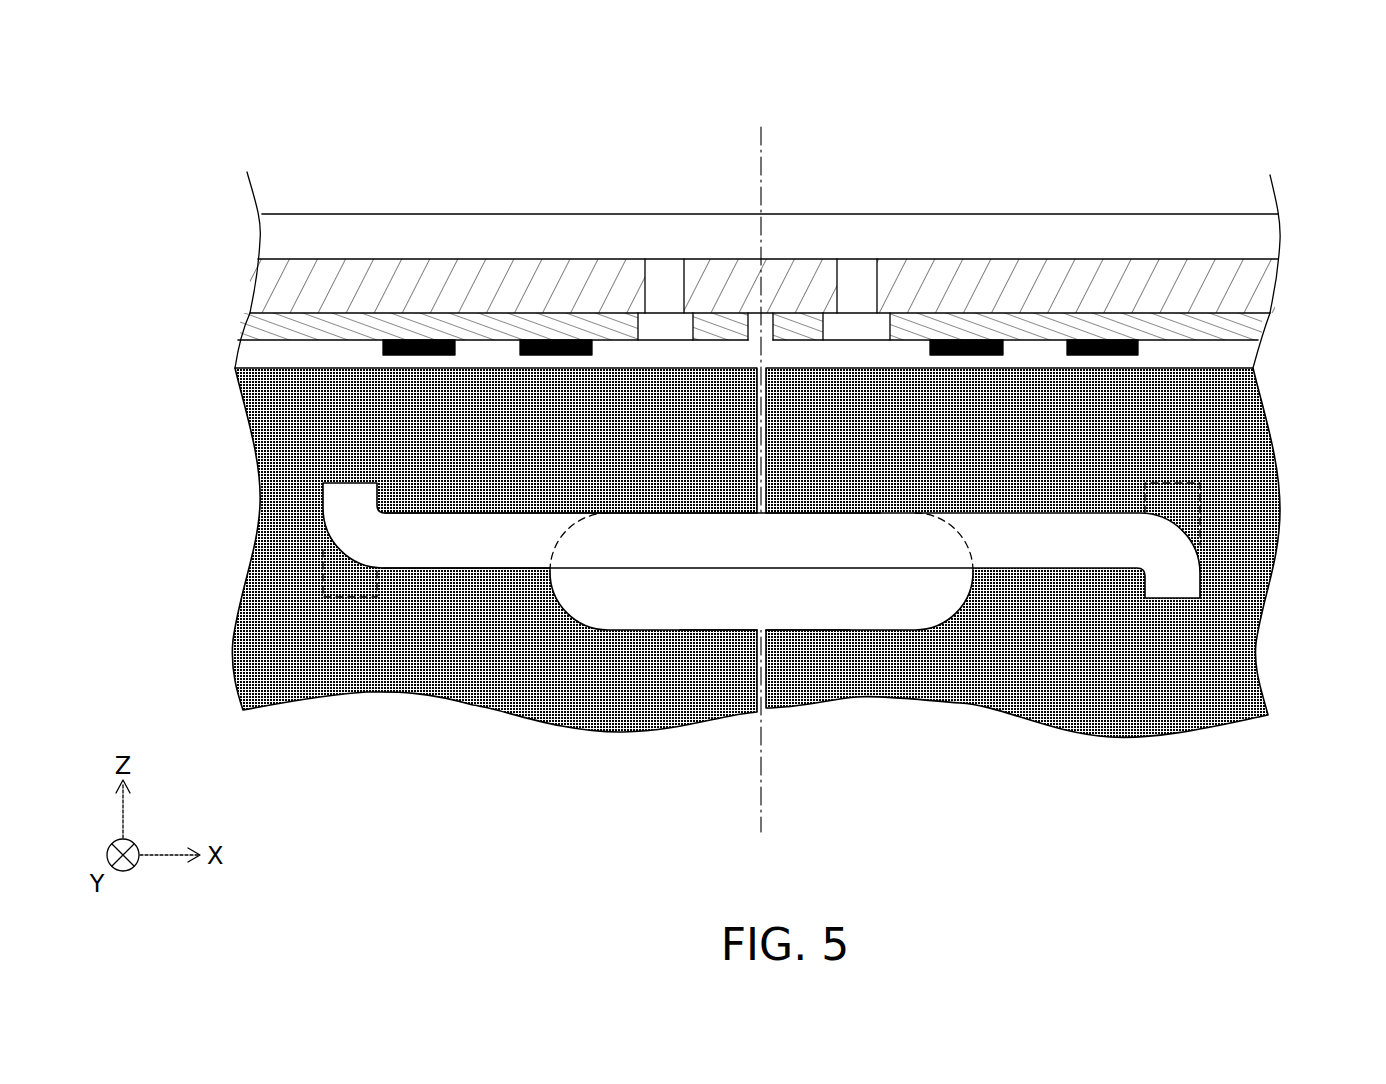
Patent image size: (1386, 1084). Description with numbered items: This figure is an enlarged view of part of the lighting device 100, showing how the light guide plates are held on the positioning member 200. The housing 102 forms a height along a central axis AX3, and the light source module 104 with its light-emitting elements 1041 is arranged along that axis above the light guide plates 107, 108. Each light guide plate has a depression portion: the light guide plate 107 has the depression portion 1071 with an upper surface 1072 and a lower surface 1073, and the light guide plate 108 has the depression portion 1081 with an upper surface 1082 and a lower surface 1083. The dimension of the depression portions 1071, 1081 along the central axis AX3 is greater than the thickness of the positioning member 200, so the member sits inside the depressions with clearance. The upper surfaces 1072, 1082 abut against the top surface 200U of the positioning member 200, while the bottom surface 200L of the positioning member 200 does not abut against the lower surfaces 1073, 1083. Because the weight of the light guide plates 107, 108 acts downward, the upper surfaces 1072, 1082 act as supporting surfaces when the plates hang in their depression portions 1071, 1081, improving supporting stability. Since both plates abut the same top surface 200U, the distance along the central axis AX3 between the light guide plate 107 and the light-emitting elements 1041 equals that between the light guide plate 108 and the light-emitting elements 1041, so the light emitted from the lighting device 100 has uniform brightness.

The lighting device 100 is at (197, 72).
The central axis AX3 is at (762, 465).
The housing 102 is at (1082, 240).
The light source module 104 is at (1232, 327).
The light-emitting elements 1041 is at (1110, 357).
The light guide plate 107 is at (283, 653).
The light guide plate 108 is at (1187, 670).
The positioning member 200 is at (310, 597).
The top surface 200U is at (492, 513).
The bottom surface 200L is at (460, 570).
The depression portion 1071 is at (706, 633).
The upper surface 1072 is at (683, 520).
The lower surface 1073 is at (660, 628).
The depression portion 1081 is at (902, 633).
The upper surface 1082 is at (880, 520).
The lower surface 1083 is at (857, 628).